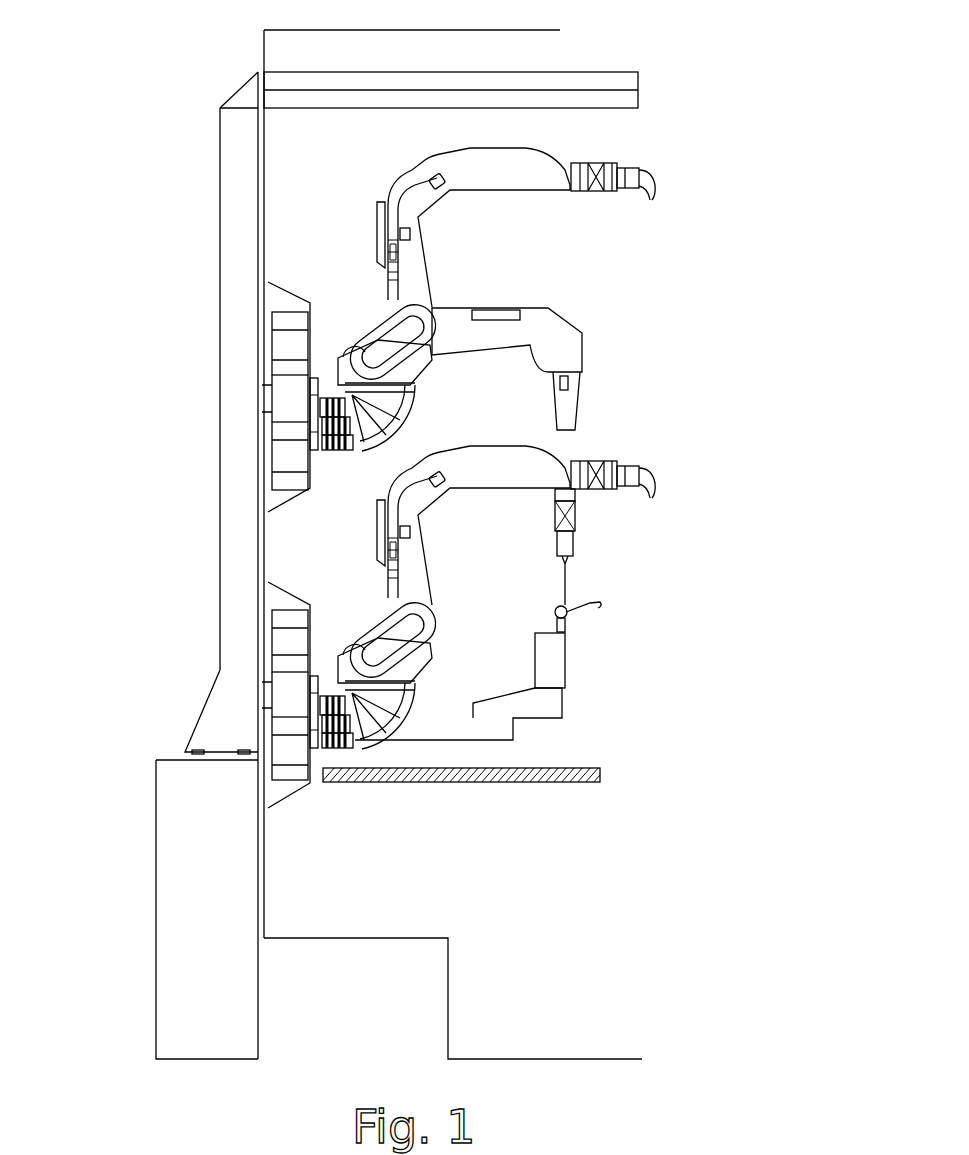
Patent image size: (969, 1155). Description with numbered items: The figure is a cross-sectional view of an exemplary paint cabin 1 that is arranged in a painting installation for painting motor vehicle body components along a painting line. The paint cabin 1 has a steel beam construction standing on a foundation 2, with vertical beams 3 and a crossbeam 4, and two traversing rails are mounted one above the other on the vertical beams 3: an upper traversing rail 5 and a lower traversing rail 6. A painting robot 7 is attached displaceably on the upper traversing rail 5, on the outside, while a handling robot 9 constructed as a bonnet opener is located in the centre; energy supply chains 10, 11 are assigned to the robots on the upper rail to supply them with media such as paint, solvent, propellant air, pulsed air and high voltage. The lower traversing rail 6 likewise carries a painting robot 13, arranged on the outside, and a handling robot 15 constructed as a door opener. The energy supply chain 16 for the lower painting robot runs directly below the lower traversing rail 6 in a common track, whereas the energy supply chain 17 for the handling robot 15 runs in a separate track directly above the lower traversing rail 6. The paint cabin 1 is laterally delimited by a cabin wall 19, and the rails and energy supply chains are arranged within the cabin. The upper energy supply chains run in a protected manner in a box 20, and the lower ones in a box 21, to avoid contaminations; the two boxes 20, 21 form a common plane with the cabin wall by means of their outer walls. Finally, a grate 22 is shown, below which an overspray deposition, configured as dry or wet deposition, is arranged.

The paint cabin 1 is at (77, 165).
The foundation 2 is at (175, 905).
The vertical beams 3 is at (235, 168).
The crossbeam 4 is at (612, 82).
The upper traversing rail 5 is at (290, 398).
The lower traversing rail 6 is at (290, 690).
The painting robot 7 is at (484, 287).
The handling robot 9 is at (588, 352).
The energy supply chain 10 is at (283, 330).
The energy supply chain 11 is at (290, 470).
The painting robot 13 is at (475, 597).
The handling robot 15 is at (568, 705).
The energy supply chain 16 is at (290, 750).
The energy supply chain 17 is at (288, 628).
The cabin wall 19 is at (262, 50).
The box 20 is at (300, 280).
The box 21 is at (300, 800).
The grate 22 is at (515, 790).